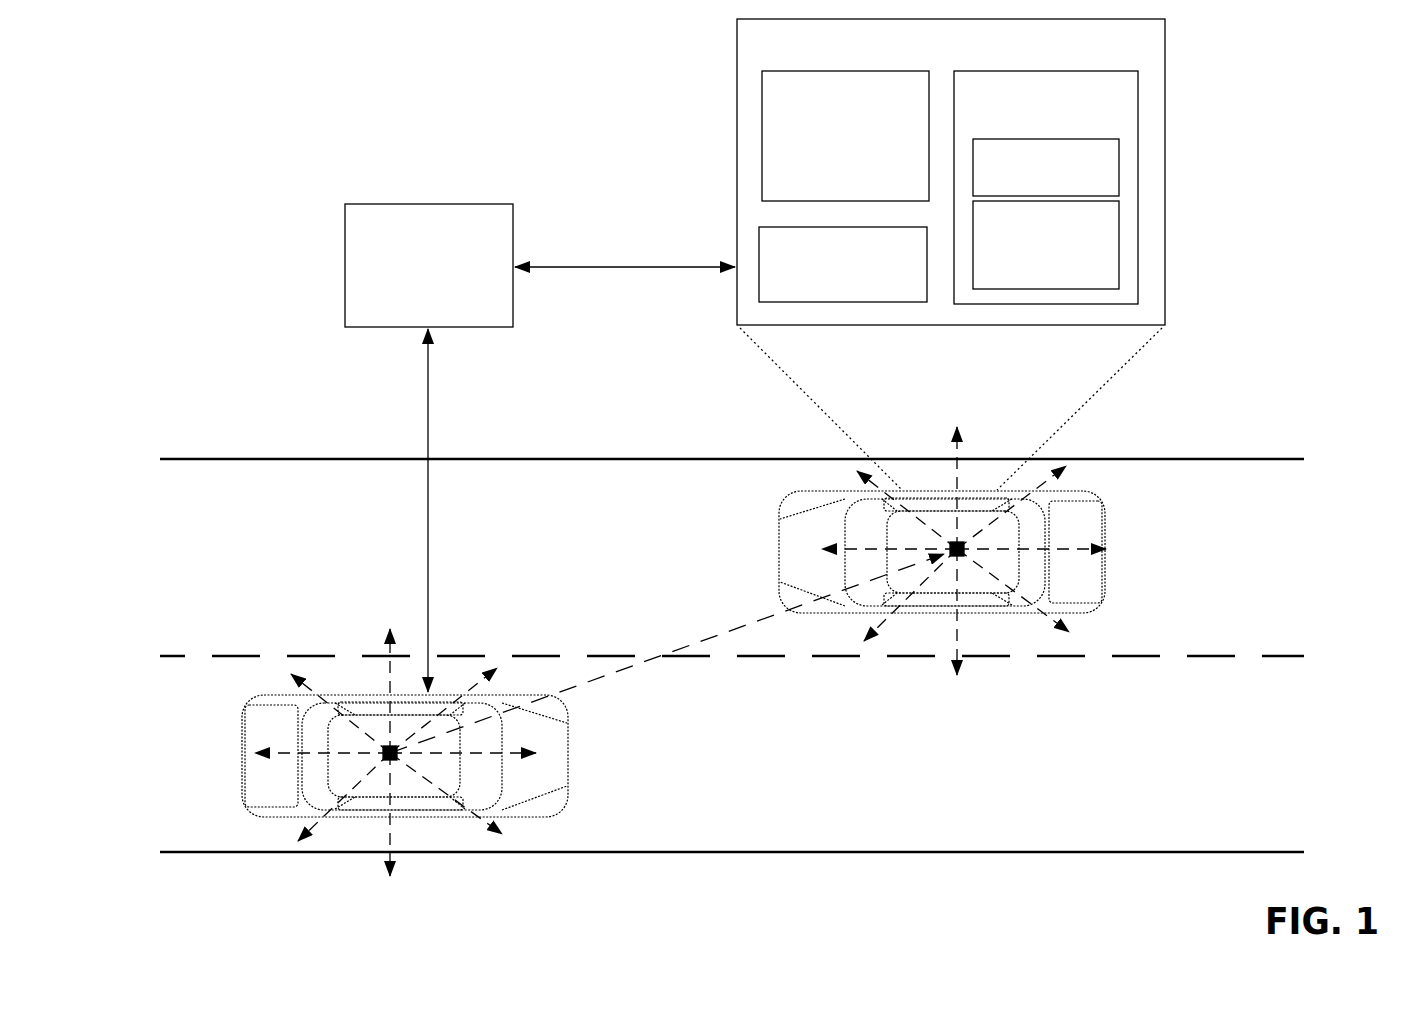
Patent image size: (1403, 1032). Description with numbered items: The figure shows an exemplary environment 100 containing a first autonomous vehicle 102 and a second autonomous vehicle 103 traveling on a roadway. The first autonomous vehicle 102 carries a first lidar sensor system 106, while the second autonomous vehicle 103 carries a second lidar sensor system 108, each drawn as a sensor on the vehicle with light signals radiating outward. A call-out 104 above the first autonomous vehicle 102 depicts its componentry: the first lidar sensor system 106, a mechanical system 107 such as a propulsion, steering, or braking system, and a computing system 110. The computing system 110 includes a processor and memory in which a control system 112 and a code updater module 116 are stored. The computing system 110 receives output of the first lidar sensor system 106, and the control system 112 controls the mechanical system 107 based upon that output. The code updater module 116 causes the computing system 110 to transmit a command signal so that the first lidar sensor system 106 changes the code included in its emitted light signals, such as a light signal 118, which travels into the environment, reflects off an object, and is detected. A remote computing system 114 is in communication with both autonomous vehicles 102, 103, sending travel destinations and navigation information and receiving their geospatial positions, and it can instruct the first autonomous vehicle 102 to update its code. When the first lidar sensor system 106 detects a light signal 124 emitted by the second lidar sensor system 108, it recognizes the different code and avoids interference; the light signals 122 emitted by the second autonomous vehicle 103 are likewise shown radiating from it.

The environment 100 is at (223, 112).
The first autonomous vehicle 102 is at (1095, 500).
The second autonomous vehicle 103 is at (568, 763).
The call-out 104 is at (1152, 53).
The first lidar sensor system 106 is at (923, 197).
The mechanical system 107 is at (923, 297).
The second lidar sensor system 108 is at (392, 757).
The computing system 110 is at (1138, 92).
The control system 112 is at (1119, 167).
The remote computing system 114 is at (467, 203).
The code updater module 116 is at (1119, 243).
The light signal 118 is at (825, 550).
The lidar beams of second vehicle 122 is at (258, 753).
The light signal 124 is at (720, 635).